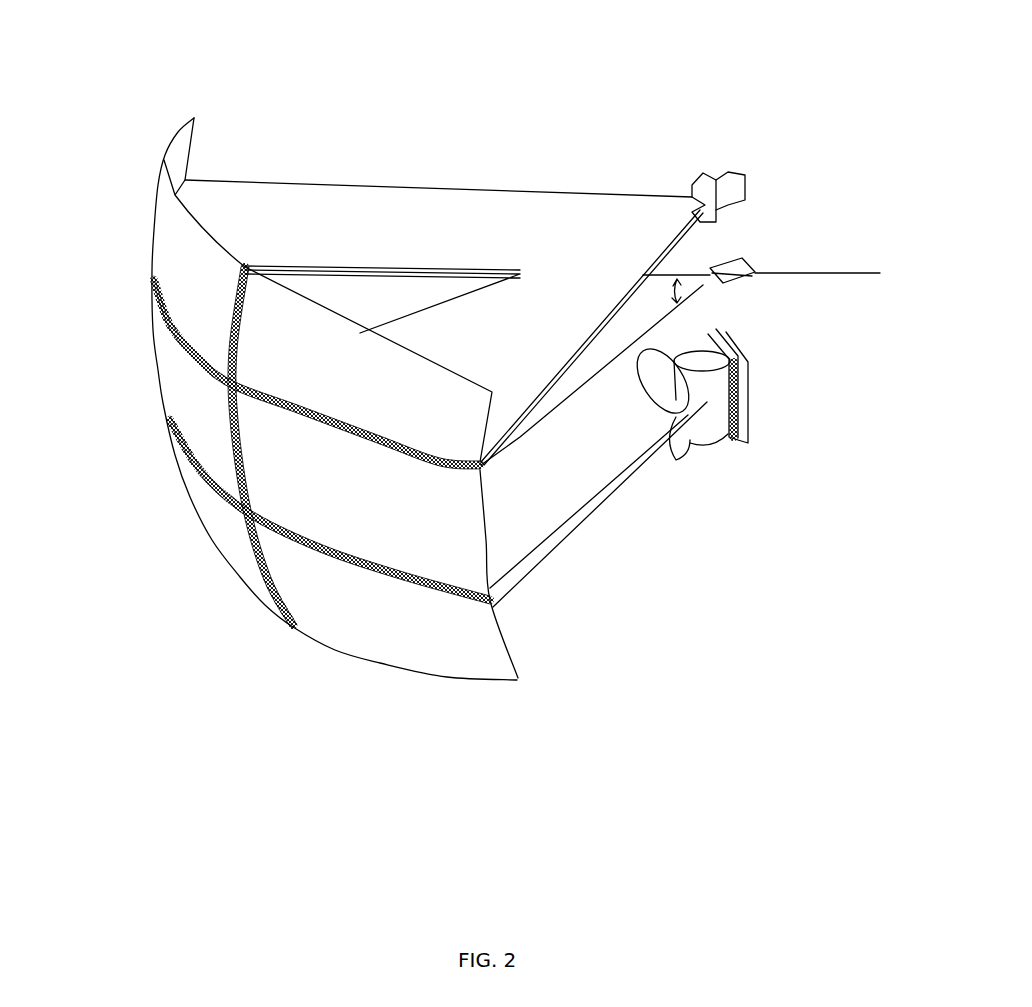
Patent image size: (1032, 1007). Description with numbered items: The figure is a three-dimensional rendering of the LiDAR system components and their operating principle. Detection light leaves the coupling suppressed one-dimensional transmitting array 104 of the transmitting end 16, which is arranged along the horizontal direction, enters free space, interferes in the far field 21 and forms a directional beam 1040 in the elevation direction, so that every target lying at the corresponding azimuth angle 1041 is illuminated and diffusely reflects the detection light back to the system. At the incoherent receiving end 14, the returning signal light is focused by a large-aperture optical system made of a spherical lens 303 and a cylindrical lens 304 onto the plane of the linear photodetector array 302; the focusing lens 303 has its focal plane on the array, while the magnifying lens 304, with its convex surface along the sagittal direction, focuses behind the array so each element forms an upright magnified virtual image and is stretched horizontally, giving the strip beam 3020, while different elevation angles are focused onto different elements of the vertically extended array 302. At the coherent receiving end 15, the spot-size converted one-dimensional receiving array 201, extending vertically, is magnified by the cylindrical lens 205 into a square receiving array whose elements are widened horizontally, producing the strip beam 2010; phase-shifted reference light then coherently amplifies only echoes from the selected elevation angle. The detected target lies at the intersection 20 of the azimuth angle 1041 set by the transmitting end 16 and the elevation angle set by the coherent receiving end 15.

The incoherent receiving end 14 is at (771, 441).
The coherent receiving end 15 is at (745, 200).
The transmitting end 16 is at (702, 365).
The intersections of the directional selectivities of the Tx, the Rc and the Ri 20 is at (247, 510).
The far field 21 is at (447, 678).
The coupling suppressed one-dimensional transmitting array of sub-wavelength pitch 104 is at (740, 268).
The spot-size converted one-dimensional receiving array of sparse antenna pitch 201 is at (734, 185).
The cylindrical lens/magnifying lens 205 is at (700, 190).
The linear photodetector array 302 is at (733, 385).
The spherical lens/focusing lens 303 is at (673, 453).
The cylindrical lens/magnifying lens 304 is at (705, 435).
The directional beam 1040 is at (257, 553).
The azimuth angle 1041 is at (680, 292).
The strip beam 2010 is at (233, 380).
The strip beam 3020 is at (470, 597).